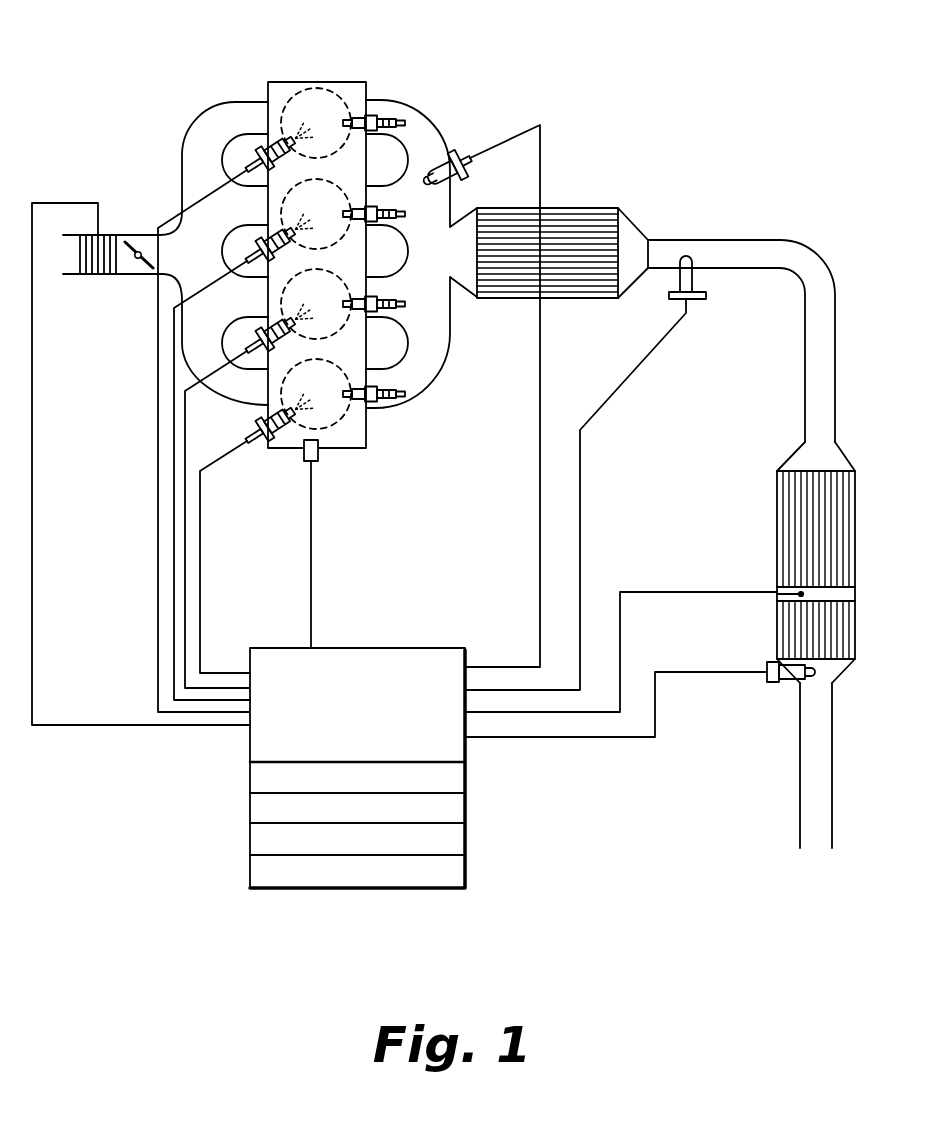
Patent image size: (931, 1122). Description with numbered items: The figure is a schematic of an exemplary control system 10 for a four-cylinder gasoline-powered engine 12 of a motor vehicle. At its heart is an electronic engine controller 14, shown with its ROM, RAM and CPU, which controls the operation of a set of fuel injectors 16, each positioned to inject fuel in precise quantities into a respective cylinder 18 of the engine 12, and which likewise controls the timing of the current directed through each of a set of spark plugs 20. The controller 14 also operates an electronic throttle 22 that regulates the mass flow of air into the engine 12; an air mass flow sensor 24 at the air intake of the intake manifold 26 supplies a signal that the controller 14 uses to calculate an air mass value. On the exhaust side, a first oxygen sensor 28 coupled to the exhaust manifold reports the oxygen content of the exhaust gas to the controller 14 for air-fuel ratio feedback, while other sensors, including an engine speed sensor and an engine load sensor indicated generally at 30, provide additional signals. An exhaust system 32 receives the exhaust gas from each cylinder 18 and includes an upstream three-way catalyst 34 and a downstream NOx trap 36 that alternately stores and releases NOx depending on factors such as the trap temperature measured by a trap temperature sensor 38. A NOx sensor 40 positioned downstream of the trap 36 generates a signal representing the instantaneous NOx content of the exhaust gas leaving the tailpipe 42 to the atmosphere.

The control system 10 is at (175, 879).
The engine 12 is at (337, 440).
The electronic engine controller 14 is at (467, 747).
The fuel injectors 16 is at (268, 135).
The cylinder 18 is at (317, 86).
The spark plugs 20 is at (372, 112).
The electronic throttle 22 is at (138, 262).
The air mass flow sensor 24 is at (88, 276).
The intake manifold 26 is at (178, 343).
The first oxygen sensor 28 is at (440, 130).
The engine speed sensor and engine load sensor 30 is at (312, 465).
The exhaust system 32 is at (800, 228).
The three-way catalyst 34 is at (587, 208).
The NOx trap 36 is at (777, 510).
The trap temperature sensor 38 is at (696, 285).
The NOx sensor 40 is at (780, 683).
The tailpipe 42 is at (810, 764).